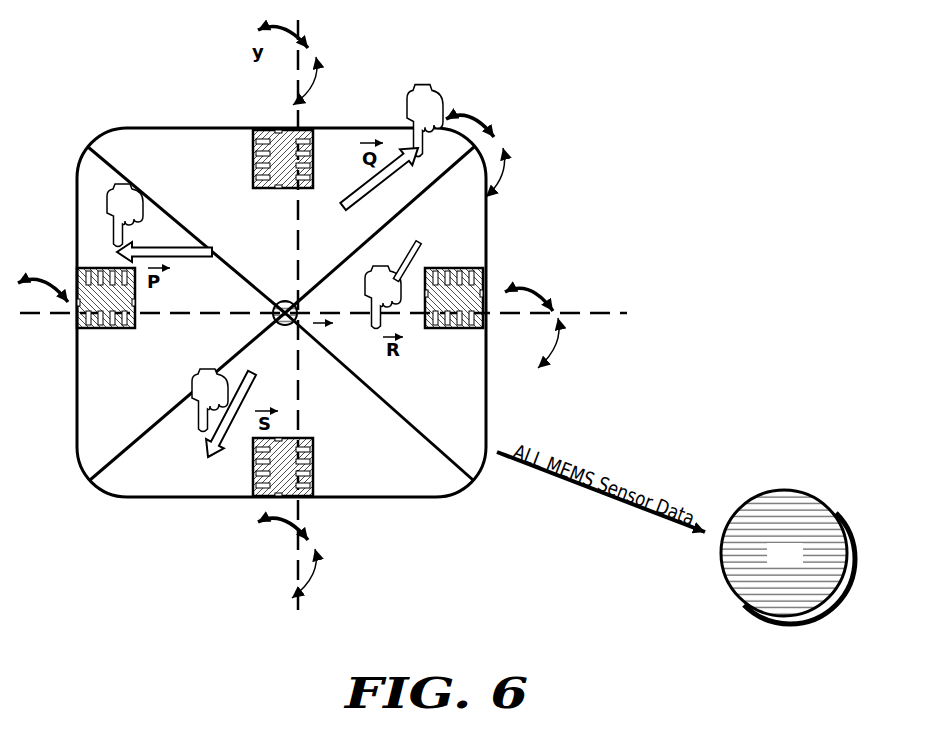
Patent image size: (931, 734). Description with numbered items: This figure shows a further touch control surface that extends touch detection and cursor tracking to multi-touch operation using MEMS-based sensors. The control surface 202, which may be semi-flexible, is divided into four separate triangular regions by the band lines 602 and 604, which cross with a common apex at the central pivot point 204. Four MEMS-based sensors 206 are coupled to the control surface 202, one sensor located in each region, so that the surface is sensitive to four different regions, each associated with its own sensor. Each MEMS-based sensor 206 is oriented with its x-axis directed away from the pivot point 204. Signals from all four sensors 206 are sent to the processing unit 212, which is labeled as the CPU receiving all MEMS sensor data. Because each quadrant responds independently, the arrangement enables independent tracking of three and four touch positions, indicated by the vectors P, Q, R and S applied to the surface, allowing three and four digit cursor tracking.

The control surface 202 is at (280, 128).
The central pivot point 204 is at (285, 300).
The MEMS-based sensor 206 is at (277, 157).
The processing unit 212 is at (785, 490).
The band line 602 is at (132, 440).
The band line 604 is at (117, 163).